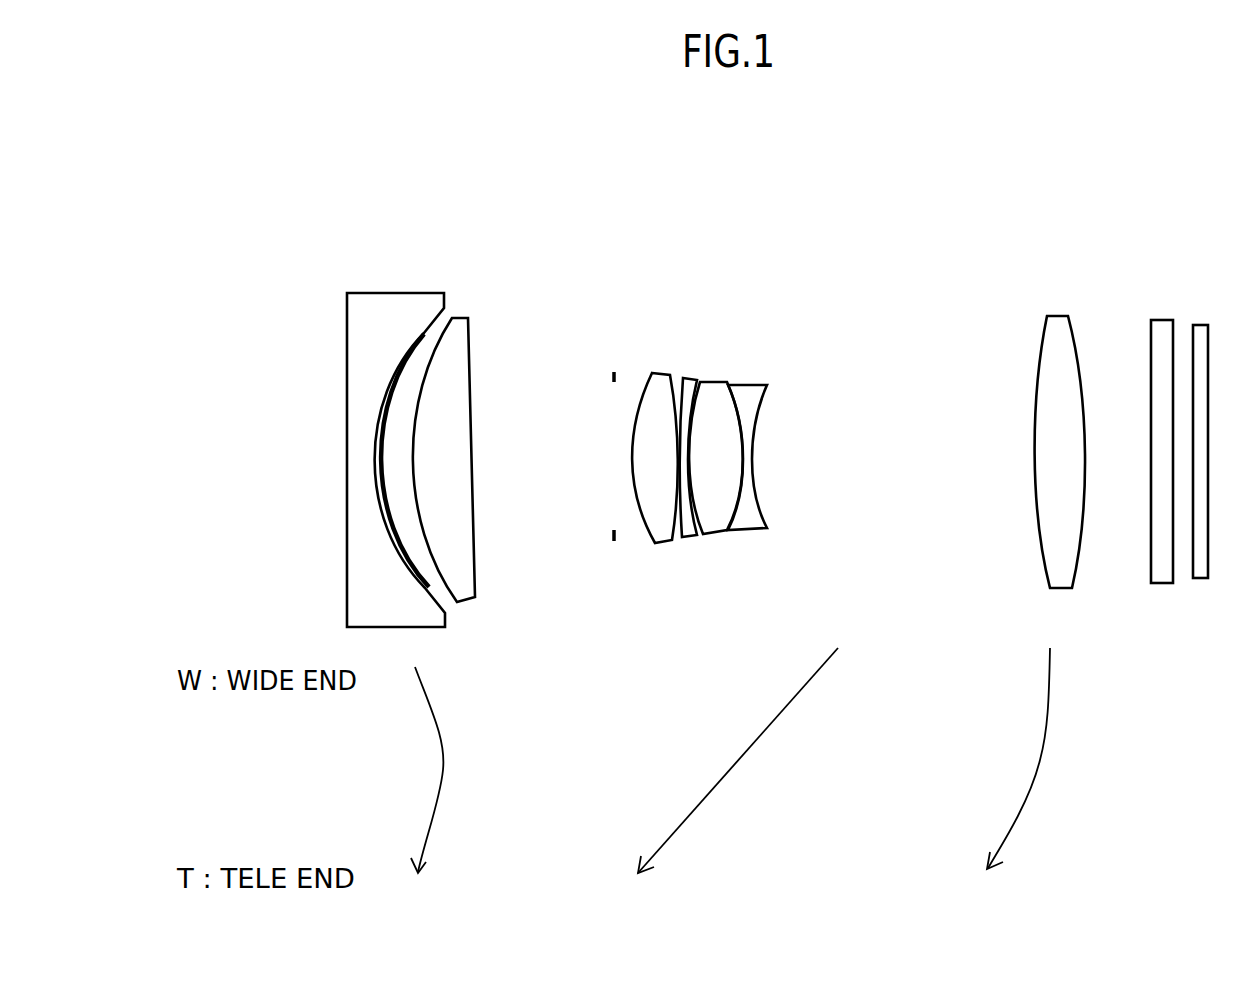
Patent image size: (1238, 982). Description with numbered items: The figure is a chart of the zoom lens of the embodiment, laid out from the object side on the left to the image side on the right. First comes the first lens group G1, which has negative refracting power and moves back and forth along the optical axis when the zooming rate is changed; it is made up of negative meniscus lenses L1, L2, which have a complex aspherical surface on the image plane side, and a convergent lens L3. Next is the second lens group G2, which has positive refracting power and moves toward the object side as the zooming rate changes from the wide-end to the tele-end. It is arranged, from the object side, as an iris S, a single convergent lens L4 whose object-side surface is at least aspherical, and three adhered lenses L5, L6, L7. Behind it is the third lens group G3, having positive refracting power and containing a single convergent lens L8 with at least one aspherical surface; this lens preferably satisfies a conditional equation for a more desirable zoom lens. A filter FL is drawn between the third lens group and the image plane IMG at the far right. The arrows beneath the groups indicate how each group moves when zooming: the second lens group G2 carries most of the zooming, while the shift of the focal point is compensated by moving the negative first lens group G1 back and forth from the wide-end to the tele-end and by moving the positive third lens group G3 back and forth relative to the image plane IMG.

The first lens group G1 is at (505, 214).
The second lens group G2 is at (815, 214).
The third lens group G3 is at (1090, 211).
The negative meniscus lens L1 is at (382, 303).
The negative meniscus lens L2 is at (418, 320).
The convergent lens L3 is at (460, 318).
The convergent lens L4 is at (655, 372).
The lens L5 is at (687, 380).
The lens L6 is at (713, 380).
The lens L7 is at (750, 385).
The convergent lens L8 is at (1058, 327).
The iris S is at (612, 365).
The filter FL is at (1162, 328).
The image plane IMG is at (1200, 330).